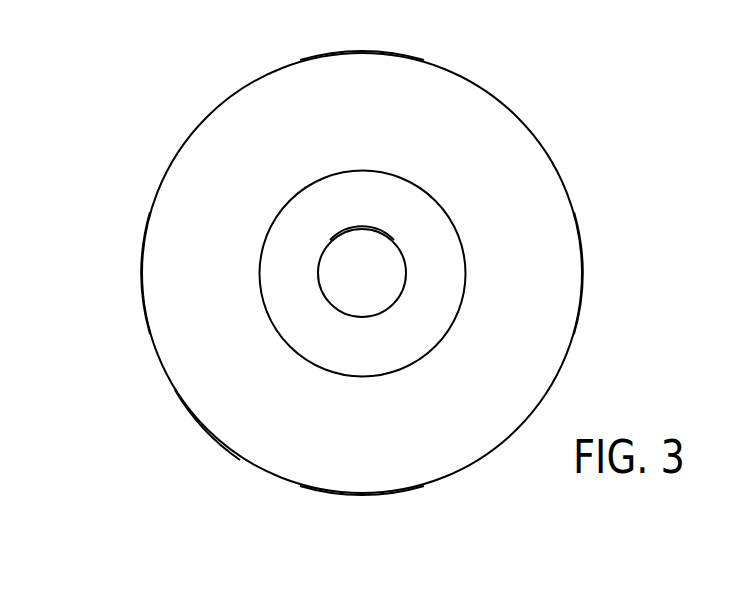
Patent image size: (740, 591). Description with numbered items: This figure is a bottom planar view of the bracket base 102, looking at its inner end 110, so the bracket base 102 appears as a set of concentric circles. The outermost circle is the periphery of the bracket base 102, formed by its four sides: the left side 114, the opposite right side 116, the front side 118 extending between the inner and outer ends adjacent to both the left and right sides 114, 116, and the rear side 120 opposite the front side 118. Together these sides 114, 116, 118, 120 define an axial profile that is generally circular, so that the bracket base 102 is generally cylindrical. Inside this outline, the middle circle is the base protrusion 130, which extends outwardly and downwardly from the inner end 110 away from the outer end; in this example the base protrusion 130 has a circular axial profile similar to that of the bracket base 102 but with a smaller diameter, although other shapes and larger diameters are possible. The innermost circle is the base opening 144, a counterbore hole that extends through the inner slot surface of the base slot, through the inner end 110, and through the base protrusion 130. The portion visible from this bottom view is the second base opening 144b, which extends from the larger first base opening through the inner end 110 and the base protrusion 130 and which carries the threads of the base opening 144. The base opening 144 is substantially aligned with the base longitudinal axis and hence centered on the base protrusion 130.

The bracket base 102 is at (128, 132).
The inner end 110 is at (235, 395).
The left side 114 is at (148, 331).
The right side 116 is at (576, 331).
The front side 118 is at (360, 52).
The rear side 120 is at (362, 493).
The base protrusion 130 is at (264, 237).
The base opening 144 is at (377, 262).
The second base opening 144b is at (365, 220).